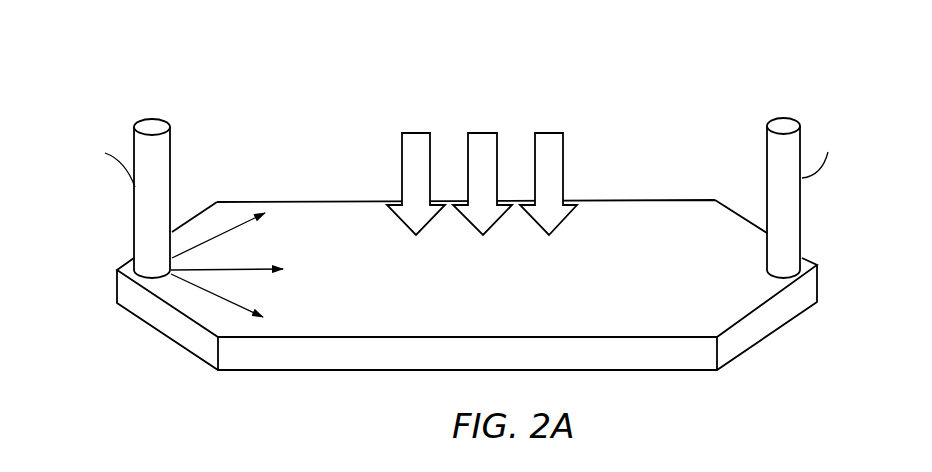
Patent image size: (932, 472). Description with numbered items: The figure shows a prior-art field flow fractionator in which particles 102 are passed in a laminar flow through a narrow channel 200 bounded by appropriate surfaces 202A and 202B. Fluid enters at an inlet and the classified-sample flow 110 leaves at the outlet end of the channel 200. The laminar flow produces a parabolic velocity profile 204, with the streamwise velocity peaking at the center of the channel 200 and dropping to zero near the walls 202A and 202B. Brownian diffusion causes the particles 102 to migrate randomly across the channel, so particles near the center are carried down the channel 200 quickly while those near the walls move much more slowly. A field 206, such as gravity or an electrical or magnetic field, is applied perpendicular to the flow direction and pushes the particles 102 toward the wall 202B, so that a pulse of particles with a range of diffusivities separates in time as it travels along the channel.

The particles 102 is at (152, 125).
The classified-sample flow 110 is at (784, 123).
The narrow channel 200 is at (233, 182).
The surface 202A is at (318, 235).
The surface 202B is at (267, 370).
The parabolic velocity profile 204 is at (415, 345).
The field 206 is at (418, 133).